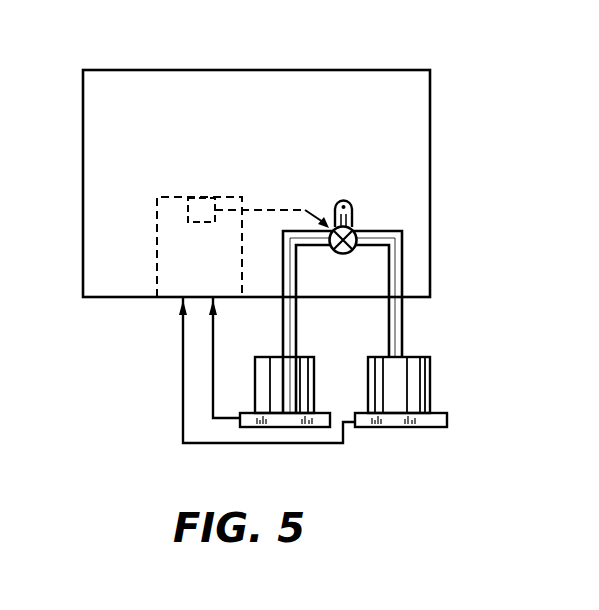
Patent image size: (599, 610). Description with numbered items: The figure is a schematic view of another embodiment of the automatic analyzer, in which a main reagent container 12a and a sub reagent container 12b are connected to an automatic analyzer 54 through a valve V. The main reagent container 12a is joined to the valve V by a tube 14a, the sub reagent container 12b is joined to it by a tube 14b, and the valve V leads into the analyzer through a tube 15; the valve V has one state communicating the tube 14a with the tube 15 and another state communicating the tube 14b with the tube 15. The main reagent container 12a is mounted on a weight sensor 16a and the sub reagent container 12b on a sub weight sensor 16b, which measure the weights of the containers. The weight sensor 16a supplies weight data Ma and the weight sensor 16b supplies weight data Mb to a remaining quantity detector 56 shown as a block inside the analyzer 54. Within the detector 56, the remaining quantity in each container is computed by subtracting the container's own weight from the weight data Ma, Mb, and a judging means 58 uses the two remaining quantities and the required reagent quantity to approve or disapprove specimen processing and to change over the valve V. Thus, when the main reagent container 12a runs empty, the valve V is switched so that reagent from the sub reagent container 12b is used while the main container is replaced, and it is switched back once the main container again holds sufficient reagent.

The automatic analyzer 54 is at (430, 107).
The tube 15 is at (291, 183).
The remaining quantity detector 56 is at (157, 272).
The judging means 58 is at (188, 215).
The valve V is at (355, 233).
The tube 14a is at (297, 331).
The tube 14b is at (402, 331).
The main reagent container 12a is at (320, 363).
The sub reagent container 12b is at (410, 381).
The weight sensor 16a is at (287, 420).
The sub weight sensor 16b is at (385, 426).
The weight data Ma is at (232, 357).
The weight data Mb is at (251, 370).